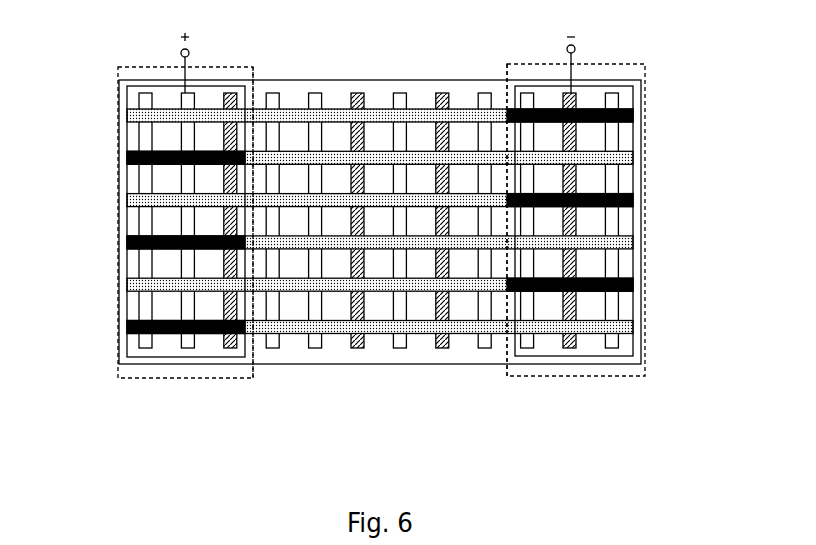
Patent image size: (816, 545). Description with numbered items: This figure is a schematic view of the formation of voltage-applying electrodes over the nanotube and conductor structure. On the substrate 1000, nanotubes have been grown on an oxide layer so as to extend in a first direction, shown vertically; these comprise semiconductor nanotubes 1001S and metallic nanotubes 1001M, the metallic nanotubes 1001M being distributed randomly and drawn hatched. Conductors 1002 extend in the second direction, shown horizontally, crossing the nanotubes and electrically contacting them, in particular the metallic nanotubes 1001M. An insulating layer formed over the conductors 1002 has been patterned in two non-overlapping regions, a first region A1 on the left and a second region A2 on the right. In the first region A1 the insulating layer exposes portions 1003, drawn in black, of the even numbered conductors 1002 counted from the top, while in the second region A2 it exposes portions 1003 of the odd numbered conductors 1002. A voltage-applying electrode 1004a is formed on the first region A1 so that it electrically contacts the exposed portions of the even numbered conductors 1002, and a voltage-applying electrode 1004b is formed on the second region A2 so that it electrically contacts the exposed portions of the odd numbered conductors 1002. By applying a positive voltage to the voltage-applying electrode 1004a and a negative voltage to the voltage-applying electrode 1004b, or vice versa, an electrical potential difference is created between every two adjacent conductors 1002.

The substrate 1000 is at (639, 350).
The metallic nanotubes 1001M is at (345, 51).
The semiconductor nanotubes 1001S is at (614, 91).
The conductors 1002 is at (634, 197).
The exposed portions of conductors 1003 is at (634, 274).
The voltage-applying electrode 1004a is at (140, 358).
The voltage-applying electrode 1004b is at (618, 356).
The first region A1 is at (253, 378).
The second region A2 is at (507, 376).